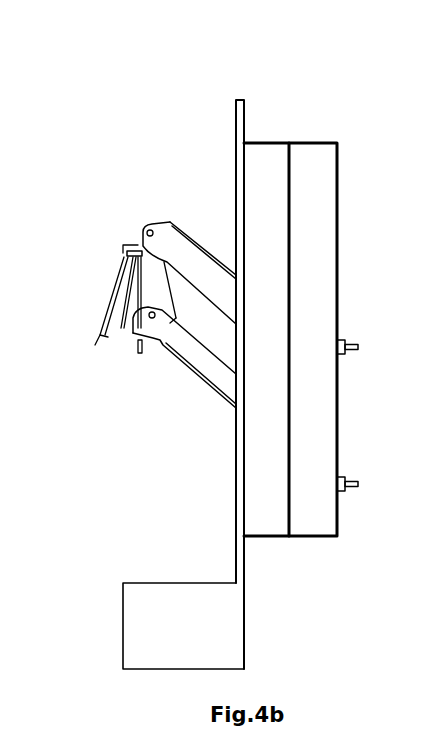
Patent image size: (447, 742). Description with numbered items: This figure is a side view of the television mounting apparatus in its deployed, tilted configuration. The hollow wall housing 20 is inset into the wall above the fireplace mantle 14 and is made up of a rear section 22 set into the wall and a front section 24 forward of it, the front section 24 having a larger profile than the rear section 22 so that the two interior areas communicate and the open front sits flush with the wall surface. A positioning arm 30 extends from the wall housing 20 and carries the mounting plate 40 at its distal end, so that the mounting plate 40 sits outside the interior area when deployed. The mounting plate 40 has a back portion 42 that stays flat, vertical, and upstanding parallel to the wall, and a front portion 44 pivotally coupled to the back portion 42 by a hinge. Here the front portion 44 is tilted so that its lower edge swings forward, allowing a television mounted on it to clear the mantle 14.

The fireplace mantle 14 is at (221, 632).
The wall housing 20 is at (257, 100).
The rear section 22 is at (318, 194).
The front section 24 is at (277, 165).
The positioning arm 30 is at (190, 403).
The mounting plate 40 is at (110, 213).
The back portion 42 is at (128, 318).
The front portion 44 is at (97, 304).